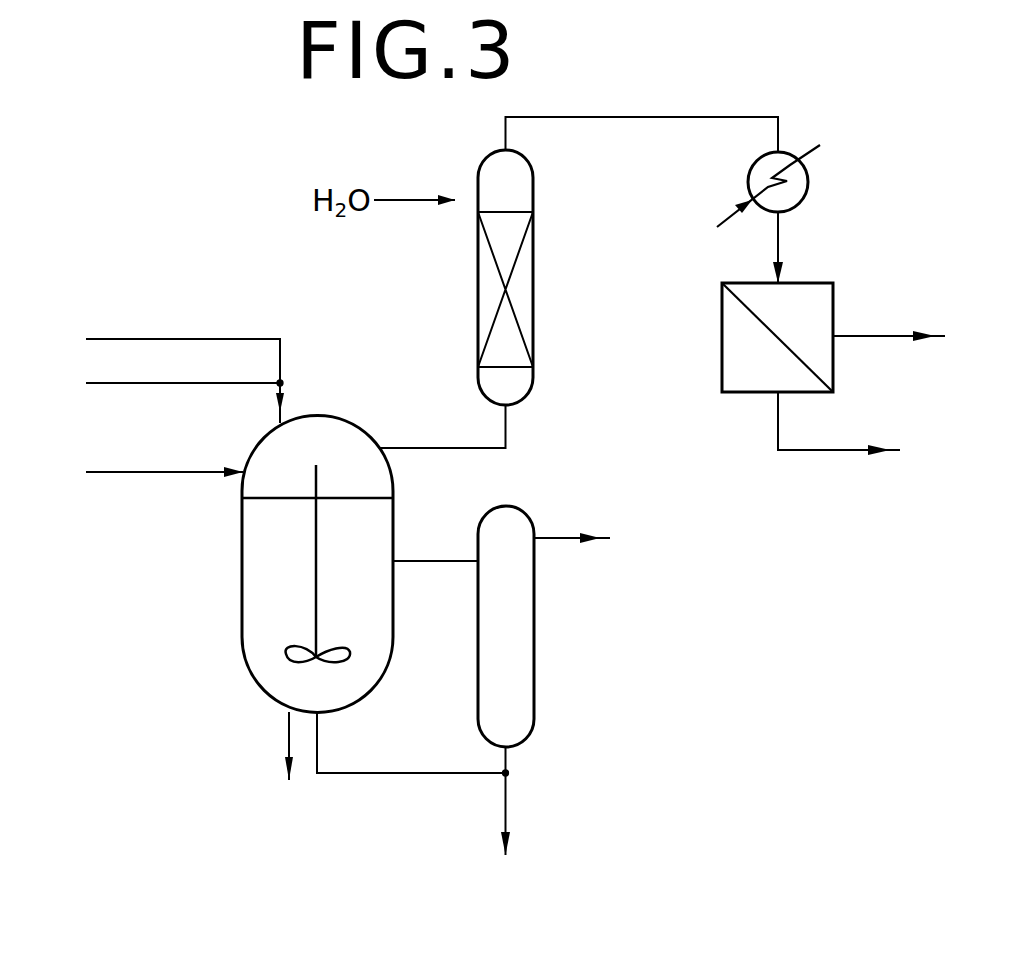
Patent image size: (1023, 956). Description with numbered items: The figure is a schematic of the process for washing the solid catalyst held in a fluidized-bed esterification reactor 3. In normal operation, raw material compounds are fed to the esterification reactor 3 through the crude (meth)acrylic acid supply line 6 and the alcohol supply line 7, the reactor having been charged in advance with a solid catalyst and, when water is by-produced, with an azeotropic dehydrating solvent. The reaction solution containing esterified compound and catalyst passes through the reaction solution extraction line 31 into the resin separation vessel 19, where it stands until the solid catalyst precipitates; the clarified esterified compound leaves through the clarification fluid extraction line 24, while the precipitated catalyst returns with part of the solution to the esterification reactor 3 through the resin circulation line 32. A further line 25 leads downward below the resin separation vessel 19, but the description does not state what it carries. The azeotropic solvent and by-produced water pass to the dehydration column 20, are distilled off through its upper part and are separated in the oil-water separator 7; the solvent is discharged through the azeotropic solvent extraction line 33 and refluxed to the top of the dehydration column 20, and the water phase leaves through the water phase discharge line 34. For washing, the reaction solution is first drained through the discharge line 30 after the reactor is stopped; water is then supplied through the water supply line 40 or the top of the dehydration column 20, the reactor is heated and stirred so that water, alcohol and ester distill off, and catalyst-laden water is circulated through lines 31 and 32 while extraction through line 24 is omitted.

The esterification reactor 3 is at (317, 539).
The crude (meth)acrylic acid supply line 6 is at (185, 365).
The oil-water separator 7 is at (459, 337).
The resin separation vessel 19 is at (515, 651).
The dehydration column 20 is at (517, 191).
The clarification fluid extraction line 24 is at (593, 538).
The product outlet line 25 is at (504, 824).
The discharge line 30 is at (267, 748).
The reaction solution extraction line 31 is at (435, 544).
The resin circulation line 32 is at (413, 744).
The azeotropic solvent extraction line 33 is at (913, 337).
The water phase discharge line 34 is at (862, 430).
The water supply line 40 is at (164, 457).